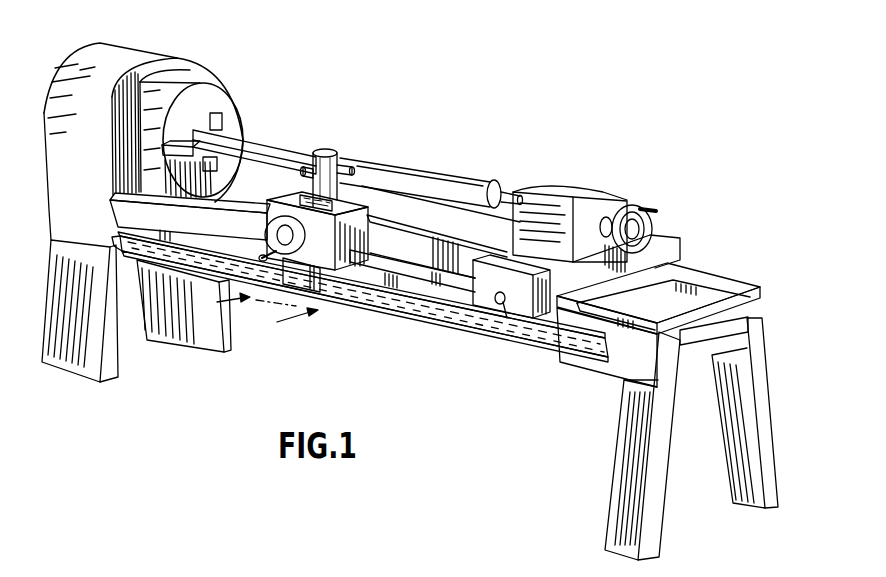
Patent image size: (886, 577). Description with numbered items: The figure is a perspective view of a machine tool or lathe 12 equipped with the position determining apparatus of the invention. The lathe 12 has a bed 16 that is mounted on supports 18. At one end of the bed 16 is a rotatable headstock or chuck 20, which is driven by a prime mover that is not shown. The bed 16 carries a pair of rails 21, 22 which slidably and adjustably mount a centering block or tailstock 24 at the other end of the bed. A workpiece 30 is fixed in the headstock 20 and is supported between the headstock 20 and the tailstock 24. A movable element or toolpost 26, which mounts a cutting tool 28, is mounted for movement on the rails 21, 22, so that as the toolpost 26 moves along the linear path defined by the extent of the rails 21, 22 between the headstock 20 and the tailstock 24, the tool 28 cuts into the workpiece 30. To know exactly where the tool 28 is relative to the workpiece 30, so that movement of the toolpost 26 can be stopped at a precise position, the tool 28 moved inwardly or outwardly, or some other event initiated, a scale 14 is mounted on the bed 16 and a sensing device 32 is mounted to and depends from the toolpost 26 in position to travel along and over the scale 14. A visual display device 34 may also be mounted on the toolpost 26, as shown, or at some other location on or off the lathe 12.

The lathe 12 is at (520, 127).
The scale 14 is at (588, 310).
The bed 16 is at (713, 323).
The supports 18 is at (93, 323).
The headstock or chuck 20 is at (193, 100).
The rail 21 is at (580, 345).
The rail 22 is at (720, 280).
The centering block or tailstock 24 is at (577, 193).
The movable element or toolpost 26 is at (353, 230).
The cutting tool 28 is at (347, 160).
The workpiece 30 is at (265, 148).
The sensing device 32 is at (310, 280).
The visual display device 34 is at (377, 178).